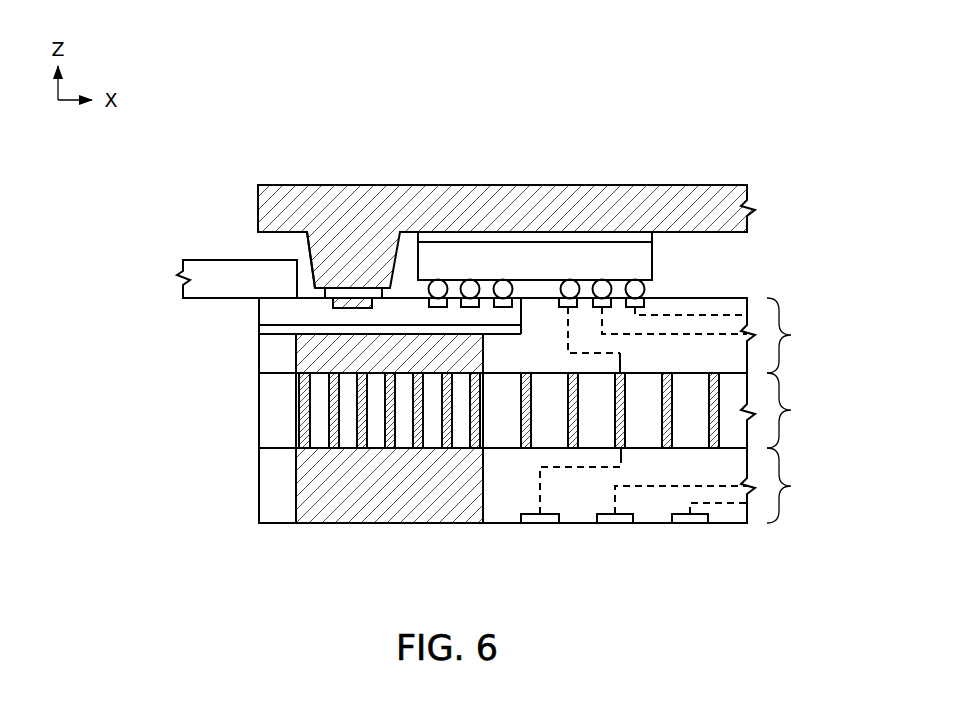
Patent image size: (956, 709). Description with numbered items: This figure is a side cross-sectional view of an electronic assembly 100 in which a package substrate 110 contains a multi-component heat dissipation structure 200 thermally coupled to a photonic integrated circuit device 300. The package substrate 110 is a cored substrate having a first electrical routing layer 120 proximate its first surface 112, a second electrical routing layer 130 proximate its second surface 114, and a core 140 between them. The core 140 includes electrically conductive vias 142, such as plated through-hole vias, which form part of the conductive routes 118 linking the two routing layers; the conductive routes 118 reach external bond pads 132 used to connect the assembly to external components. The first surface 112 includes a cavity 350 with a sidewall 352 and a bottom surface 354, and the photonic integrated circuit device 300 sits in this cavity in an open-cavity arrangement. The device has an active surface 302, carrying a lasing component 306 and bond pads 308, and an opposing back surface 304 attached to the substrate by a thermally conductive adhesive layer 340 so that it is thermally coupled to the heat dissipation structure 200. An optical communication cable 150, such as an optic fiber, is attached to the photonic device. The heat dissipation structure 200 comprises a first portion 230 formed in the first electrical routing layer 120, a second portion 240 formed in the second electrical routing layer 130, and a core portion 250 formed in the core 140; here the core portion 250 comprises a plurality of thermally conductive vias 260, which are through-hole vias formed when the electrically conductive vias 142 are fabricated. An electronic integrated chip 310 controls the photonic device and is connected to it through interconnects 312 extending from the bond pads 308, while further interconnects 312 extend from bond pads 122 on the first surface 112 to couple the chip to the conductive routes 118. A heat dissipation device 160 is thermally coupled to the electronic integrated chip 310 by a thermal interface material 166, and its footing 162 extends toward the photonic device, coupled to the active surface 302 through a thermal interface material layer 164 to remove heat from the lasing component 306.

The electronic assembly 100 is at (287, 91).
The package substrate 110 is at (238, 545).
The first surface 112 is at (730, 297).
The second surface 114 is at (732, 525).
The conductive route 118 is at (658, 315).
The first electrical routing layer 120 is at (550, 335).
The bond pad 122 is at (646, 297).
The second electrical routing layer 130 is at (804, 485).
The external bond pad 132 is at (692, 518).
The core 140 is at (550, 410).
The electrically conductive via 142 is at (572, 425).
The optical communication cable 150 is at (215, 273).
The heat dissipation device 160 is at (728, 192).
The footing 162 is at (291, 313).
The thermal interface material layer 164 is at (360, 295).
The thermal interface material 166 is at (577, 237).
The heat dissipation structure 200 is at (275, 468).
The first portion 230 is at (437, 352).
The second portion 240 is at (335, 478).
The core portion 250 is at (487, 373).
The thermally conductive via 260 is at (418, 405).
The photonic integrated circuit device 300 is at (279, 315).
The active surface 302 is at (284, 310).
The back surface 304 is at (278, 323).
The lasing component 306 is at (306, 247).
The bond pad 308 is at (465, 281).
The electronic integrated chip 310 is at (493, 258).
The interconnect 312 is at (605, 279).
The thermally conductive adhesive layer 340 is at (268, 331).
The cavity 350 is at (287, 339).
The sidewall 352 is at (523, 318).
The bottom surface 354 is at (266, 339).